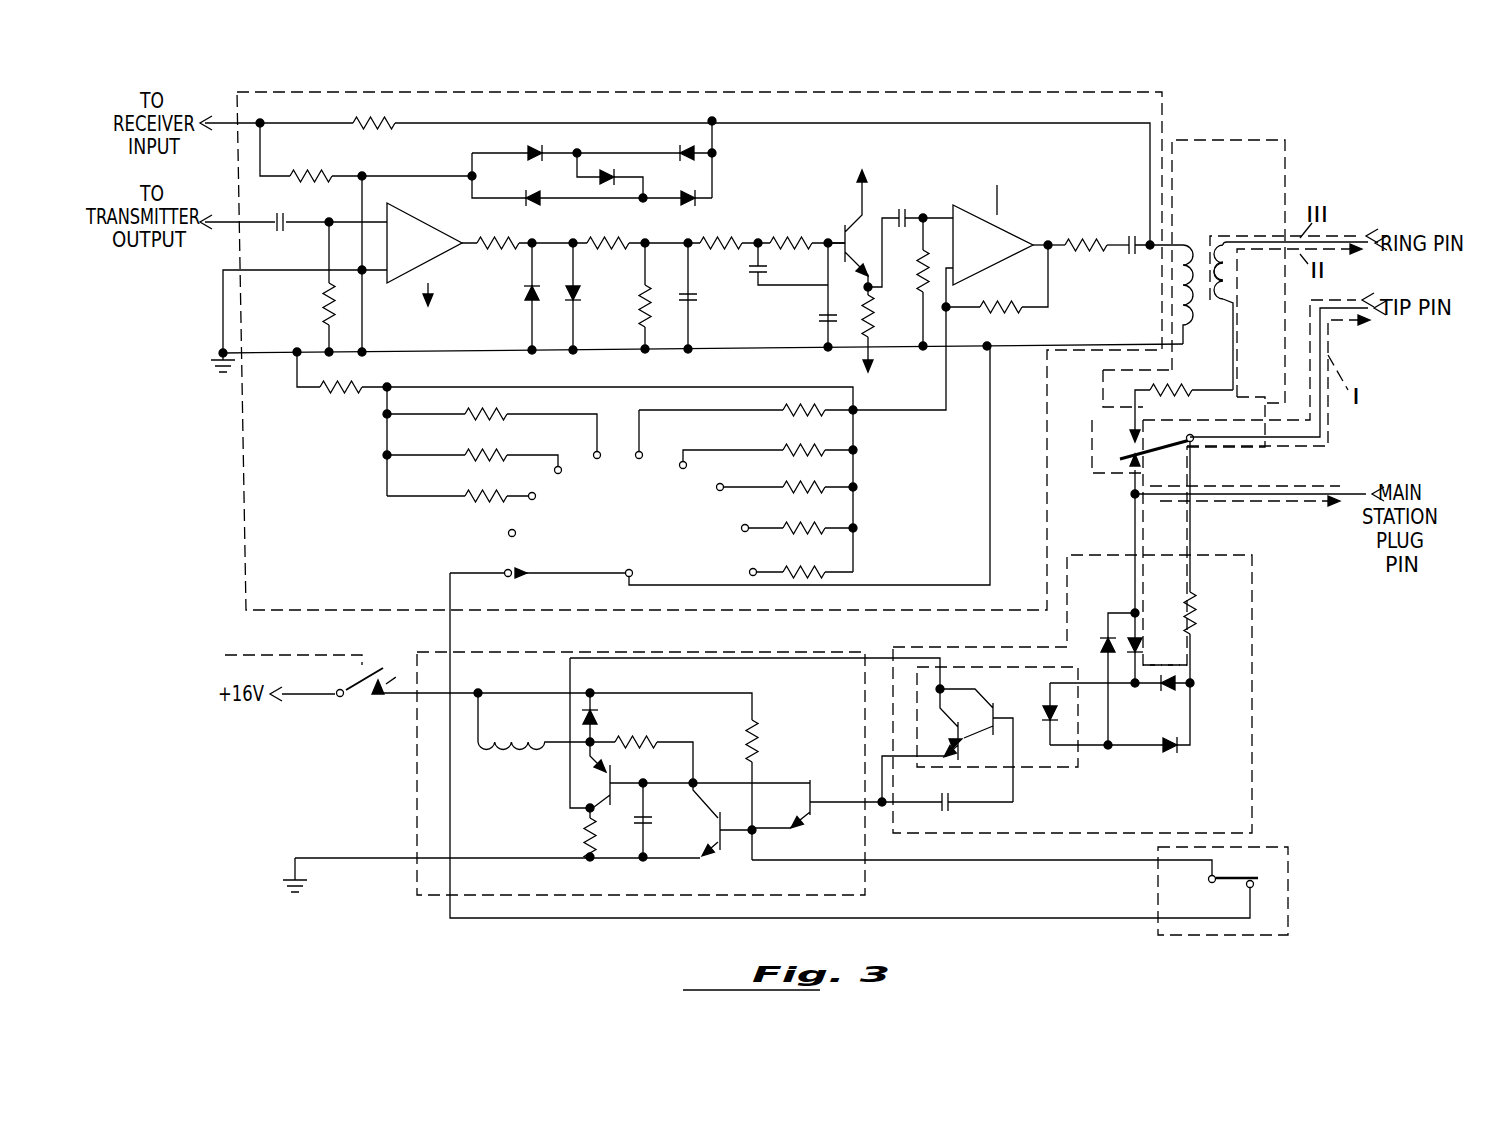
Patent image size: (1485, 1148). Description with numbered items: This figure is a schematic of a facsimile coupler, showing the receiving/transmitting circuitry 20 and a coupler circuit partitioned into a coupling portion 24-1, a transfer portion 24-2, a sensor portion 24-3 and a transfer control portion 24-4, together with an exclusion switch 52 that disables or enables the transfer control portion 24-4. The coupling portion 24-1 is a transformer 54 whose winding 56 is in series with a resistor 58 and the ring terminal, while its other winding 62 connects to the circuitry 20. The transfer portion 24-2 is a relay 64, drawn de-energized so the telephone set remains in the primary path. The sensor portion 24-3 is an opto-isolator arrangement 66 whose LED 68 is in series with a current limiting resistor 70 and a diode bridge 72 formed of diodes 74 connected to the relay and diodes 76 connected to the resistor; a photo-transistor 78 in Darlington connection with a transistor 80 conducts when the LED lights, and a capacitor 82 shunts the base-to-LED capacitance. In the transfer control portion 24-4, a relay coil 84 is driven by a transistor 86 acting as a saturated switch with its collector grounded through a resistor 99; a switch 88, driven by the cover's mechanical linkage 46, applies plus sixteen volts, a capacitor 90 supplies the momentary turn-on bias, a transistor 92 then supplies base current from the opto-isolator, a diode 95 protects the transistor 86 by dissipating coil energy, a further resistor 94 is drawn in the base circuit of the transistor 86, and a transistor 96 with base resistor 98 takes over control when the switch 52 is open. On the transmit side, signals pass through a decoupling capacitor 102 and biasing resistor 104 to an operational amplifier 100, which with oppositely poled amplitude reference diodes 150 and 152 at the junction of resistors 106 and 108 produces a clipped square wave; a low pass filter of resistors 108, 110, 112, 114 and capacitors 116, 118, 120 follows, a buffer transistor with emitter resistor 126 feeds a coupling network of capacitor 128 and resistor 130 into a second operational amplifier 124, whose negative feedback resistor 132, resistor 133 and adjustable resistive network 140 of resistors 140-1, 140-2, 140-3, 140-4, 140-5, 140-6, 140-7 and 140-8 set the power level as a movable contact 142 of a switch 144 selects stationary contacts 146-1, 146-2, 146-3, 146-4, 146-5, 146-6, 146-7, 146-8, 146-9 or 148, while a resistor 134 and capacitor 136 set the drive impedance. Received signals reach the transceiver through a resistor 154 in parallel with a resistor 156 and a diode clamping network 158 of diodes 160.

The receiving/transmitting circuitry 20 is at (1165, 93).
The coupling portion 24-1 is at (1262, 137).
The transfer portion 24-2 is at (1093, 500).
The sensor portion 24-3 is at (1252, 638).
The transfer control portion 24-4 is at (600, 652).
The mechanical linkage 46 is at (298, 655).
The exclusion activating or deactivating switch 52 is at (1286, 846).
The transformer 54 is at (1297, 301).
The winding 56 is at (1228, 286).
The resistor 58 is at (1176, 399).
The winding 62 is at (1184, 240).
The relay 64 is at (1120, 452).
The opto-isolator arrangement 66 is at (1068, 770).
The LED 68 is at (1048, 709).
The current limiting resistor 70 is at (1197, 615).
The diode bridge 72 is at (1165, 651).
The diodes 74 is at (1136, 644).
The diodes 76 is at (1164, 689).
The photo-transistor 78 is at (986, 710).
The transistor 80 is at (964, 740).
The capacitor 82 is at (961, 803).
The relay coil 84 is at (513, 749).
The transistor 86 is at (603, 787).
The switch 88 is at (380, 670).
The capacitor 90 is at (648, 818).
The transistor 92 is at (814, 796).
The resistor 94 is at (650, 742).
The diode 95 is at (580, 714).
The transistor 96 is at (727, 848).
The resistor 98 is at (763, 741).
The resistor 99 is at (583, 830).
The operational amplifier 100 is at (416, 236).
The decoupling capacitor 102 is at (286, 220).
The biasing resistor 104 is at (323, 299).
The resistor 106 is at (498, 227).
The resistor 108 is at (602, 240).
The resistor 110 is at (720, 240).
The resistor 112 is at (793, 238).
The resistor 114 is at (642, 307).
The capacitor 116 is at (691, 300).
The capacitor 118 is at (752, 288).
The capacitor 120 is at (823, 320).
The operational amplifier 124 is at (1002, 234).
The resistor 126 is at (880, 324).
The capacitor 128 is at (907, 208).
The resistor 130 is at (917, 284).
The negative feedback resistor 132 is at (1013, 314).
The resistor 133 is at (325, 400).
The resistor 134 is at (1076, 235).
The capacitor 136 is at (1126, 258).
The adjustable resistive network 140 is at (492, 378).
The resistor 140-1 is at (793, 569).
The resistor 140-2 is at (788, 526).
The resistor 140-3 is at (793, 486).
The resistor 140-4 is at (786, 450).
The resistor 140-5 is at (784, 409).
The resistor 140-6 is at (498, 410).
The resistor 140-7 is at (469, 452).
The resistor 140-8 is at (469, 494).
The movable contact 142 is at (551, 574).
The switch 144 is at (624, 527).
The stationary contact 146-1 is at (729, 574).
The stationary contact 146-2 is at (721, 530).
The stationary contact 146-3 is at (697, 492).
The stationary contact 146-4 is at (680, 465).
The stationary contact 146-5 is at (639, 448).
The stationary contact 146-6 is at (595, 452).
The stationary contact 146-7 is at (583, 474).
The stationary contact 146-8 is at (558, 498).
The stationary contact 146-9 is at (538, 534).
The stationary contact 148 is at (506, 570).
The amplitude reference diode 150 is at (524, 295).
The amplitude reference diode 152 is at (582, 290).
The resistor 154 is at (392, 122).
The resistor 156 is at (314, 174).
The diode clamping network 158 is at (705, 172).
The diodes 160 is at (528, 150).